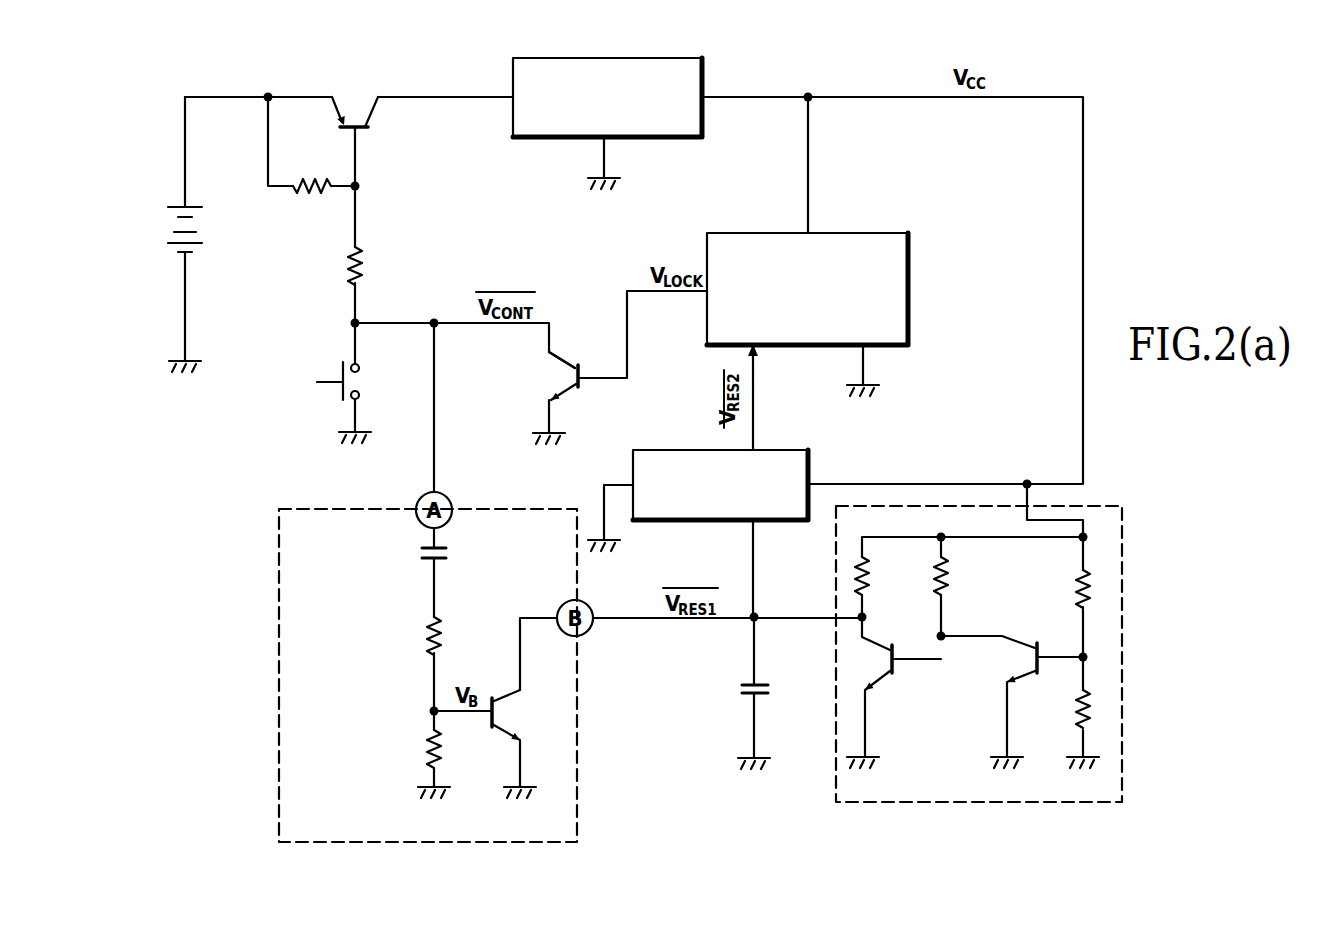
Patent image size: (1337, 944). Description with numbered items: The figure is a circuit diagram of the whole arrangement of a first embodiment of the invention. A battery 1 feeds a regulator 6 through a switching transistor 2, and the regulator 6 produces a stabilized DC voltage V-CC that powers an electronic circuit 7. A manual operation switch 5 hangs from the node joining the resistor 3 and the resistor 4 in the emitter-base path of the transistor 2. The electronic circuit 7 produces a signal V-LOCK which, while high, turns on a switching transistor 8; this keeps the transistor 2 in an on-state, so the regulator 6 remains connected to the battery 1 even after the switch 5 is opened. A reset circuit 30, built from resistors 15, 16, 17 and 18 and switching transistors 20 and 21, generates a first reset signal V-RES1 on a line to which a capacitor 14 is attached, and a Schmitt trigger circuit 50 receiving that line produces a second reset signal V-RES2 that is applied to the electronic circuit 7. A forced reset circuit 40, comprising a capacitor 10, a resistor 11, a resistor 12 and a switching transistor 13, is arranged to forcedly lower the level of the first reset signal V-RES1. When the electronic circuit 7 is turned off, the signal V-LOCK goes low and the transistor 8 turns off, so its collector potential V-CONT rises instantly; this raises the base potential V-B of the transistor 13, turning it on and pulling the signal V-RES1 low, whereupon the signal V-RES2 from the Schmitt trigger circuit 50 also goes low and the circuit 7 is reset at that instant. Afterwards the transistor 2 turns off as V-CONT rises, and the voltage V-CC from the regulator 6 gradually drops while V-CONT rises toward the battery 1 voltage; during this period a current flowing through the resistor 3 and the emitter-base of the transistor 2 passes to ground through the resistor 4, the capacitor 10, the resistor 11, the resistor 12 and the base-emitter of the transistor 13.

The battery 1 is at (203, 218).
The switching transistor 2 is at (349, 112).
The resistor 3 is at (318, 180).
The resistor 4 is at (362, 265).
The manual operation switch 5 is at (360, 382).
The regulator 6 is at (535, 137).
The electronic circuit 7 is at (858, 233).
The switching transistor 8 is at (565, 378).
The capacitor 10 is at (447, 553).
The resistor 11 is at (426, 634).
The resistor 12 is at (428, 746).
The switching transistor 13 is at (506, 718).
The capacitor 14 is at (768, 688).
The resistor 15 is at (870, 575).
The resistor 16 is at (950, 580).
The resistor 17 is at (1076, 587).
The resistor 18 is at (1076, 712).
The switching transistor 20 is at (1020, 656).
The switching transistor 21 is at (891, 678).
The reset circuit 30 is at (884, 802).
The forced reset circuit 40 is at (322, 842).
The Schmitt trigger circuit 50 is at (778, 450).